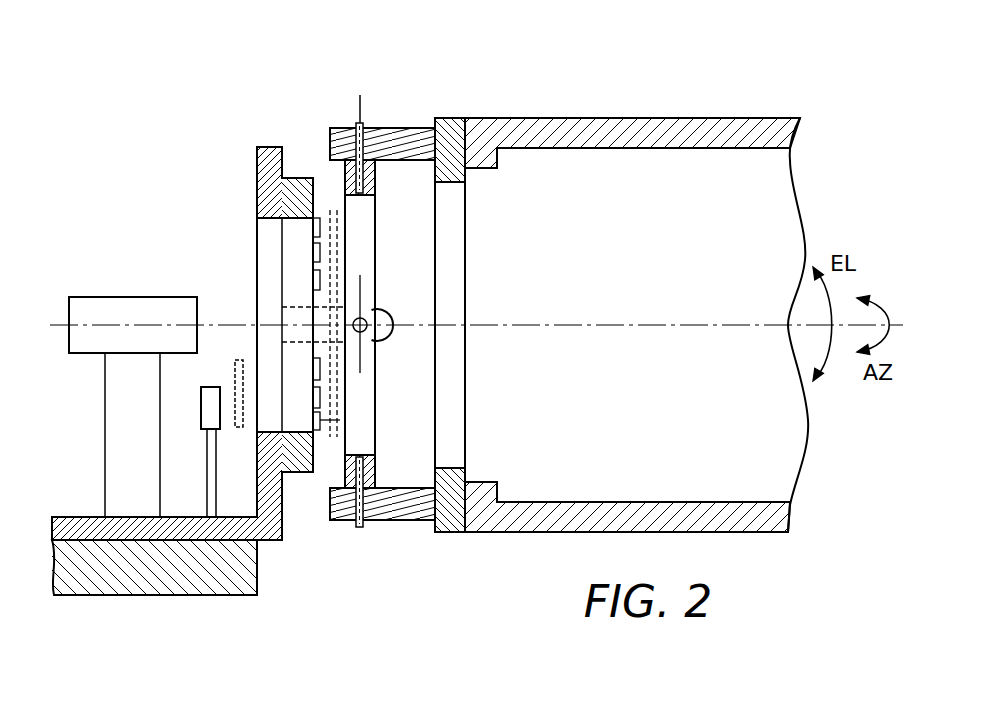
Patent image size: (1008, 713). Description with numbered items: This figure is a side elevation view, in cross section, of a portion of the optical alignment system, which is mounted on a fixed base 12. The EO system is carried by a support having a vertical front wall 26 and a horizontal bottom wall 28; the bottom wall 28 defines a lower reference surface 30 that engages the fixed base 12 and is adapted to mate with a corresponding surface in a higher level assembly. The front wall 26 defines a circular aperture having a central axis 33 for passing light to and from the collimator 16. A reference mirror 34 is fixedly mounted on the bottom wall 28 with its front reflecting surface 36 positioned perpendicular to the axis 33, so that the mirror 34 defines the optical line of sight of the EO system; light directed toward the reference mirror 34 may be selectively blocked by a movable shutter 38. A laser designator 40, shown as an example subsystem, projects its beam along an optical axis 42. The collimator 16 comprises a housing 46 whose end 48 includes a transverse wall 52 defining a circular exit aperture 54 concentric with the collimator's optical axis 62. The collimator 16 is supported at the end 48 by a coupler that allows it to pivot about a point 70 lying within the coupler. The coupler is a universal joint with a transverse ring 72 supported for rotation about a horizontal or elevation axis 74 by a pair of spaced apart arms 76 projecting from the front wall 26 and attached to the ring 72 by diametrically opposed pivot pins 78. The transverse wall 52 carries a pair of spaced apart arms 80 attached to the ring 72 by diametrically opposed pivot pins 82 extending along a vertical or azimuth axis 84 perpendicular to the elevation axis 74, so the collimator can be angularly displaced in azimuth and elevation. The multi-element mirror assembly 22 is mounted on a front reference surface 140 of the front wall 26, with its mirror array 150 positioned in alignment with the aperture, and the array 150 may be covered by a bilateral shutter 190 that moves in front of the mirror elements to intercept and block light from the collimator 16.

The fixed base 12 is at (200, 595).
The collimator 16 is at (740, 58).
The multi-element mirror assembly 22 is at (283, 530).
The vertical front wall 26 is at (257, 175).
The horizontal bottom wall 28 is at (73, 517).
The lower reference surface 30 is at (135, 541).
The central axis 33 is at (270, 322).
The reference mirror 34 is at (200, 410).
The front reflecting surface 36 is at (222, 428).
The movable shutter 38 is at (242, 358).
The laser designator 40 is at (97, 297).
The optical axis 42 is at (155, 322).
The housing 46 is at (587, 118).
The end 48 is at (451, 118).
The transverse wall 52 is at (465, 182).
The circular exit aperture 54 is at (455, 237).
The optical line of sight or axis 62 is at (593, 323).
The pivot point 70 is at (365, 318).
The transverse ring 72 is at (377, 393).
The horizontal or elevation axis 74 is at (366, 333).
The spaced apart arms 76 is at (345, 308).
The pivot pins 78 is at (388, 312).
The spaced apart arms 80 is at (413, 129).
The pivot pins 82 is at (355, 125).
The vertical or azimuth axis 84 is at (358, 100).
The front reference surface 140 is at (298, 482).
The mirror array 150 is at (323, 420).
The bilateral shutter 190 is at (327, 258).